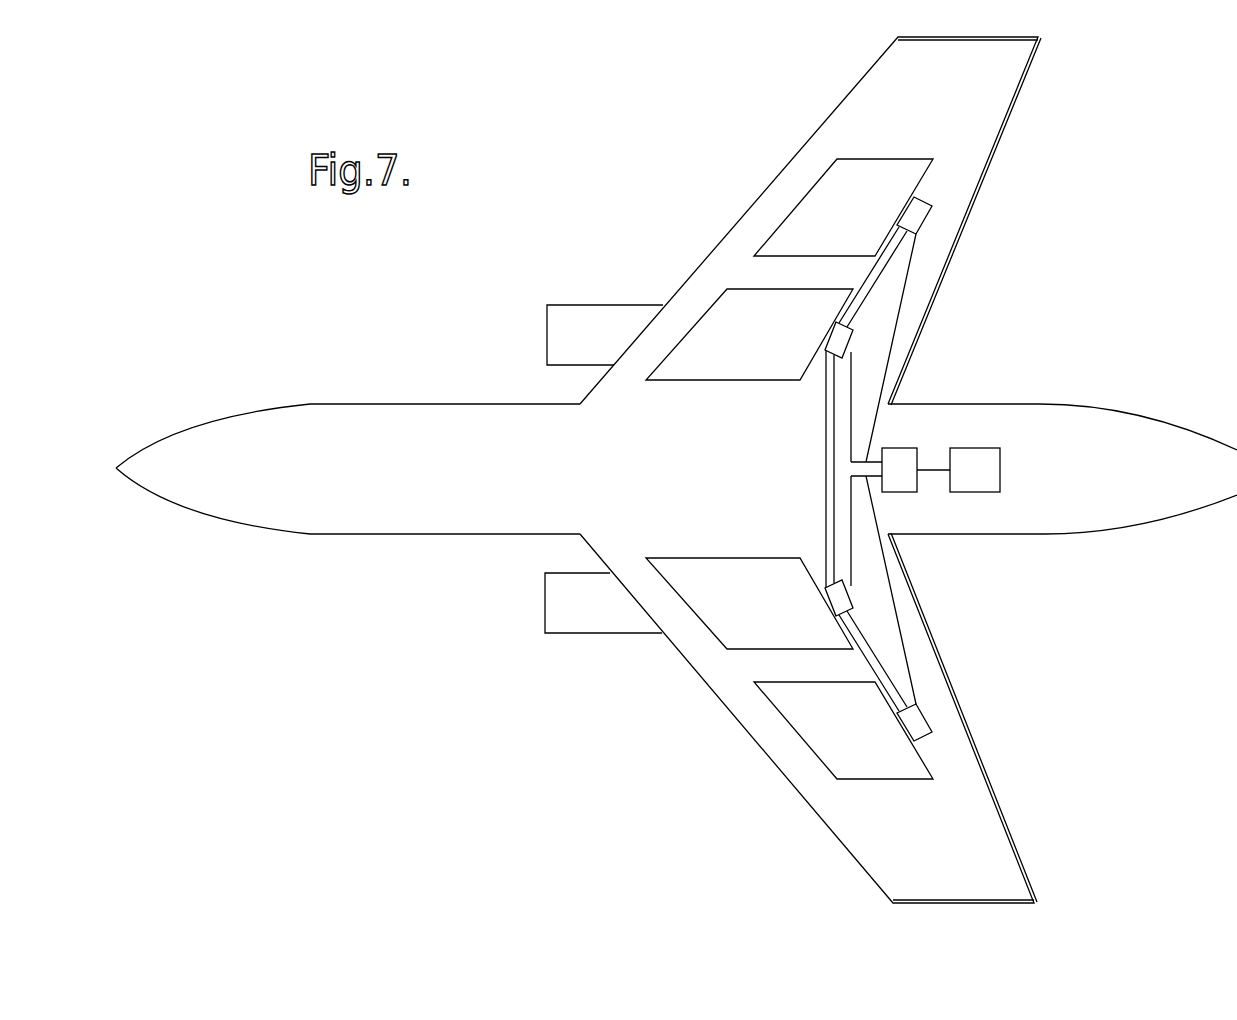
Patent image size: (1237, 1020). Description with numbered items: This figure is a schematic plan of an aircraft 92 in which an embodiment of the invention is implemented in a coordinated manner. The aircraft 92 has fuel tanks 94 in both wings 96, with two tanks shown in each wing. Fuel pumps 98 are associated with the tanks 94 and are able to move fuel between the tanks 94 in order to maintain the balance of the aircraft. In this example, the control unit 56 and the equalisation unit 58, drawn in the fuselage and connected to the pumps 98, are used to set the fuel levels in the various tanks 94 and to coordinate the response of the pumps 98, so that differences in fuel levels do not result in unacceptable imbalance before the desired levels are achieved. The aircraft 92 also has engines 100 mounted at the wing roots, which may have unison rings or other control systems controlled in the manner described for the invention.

The aircraft 92 is at (318, 414).
The fuel tanks 94 is at (831, 224).
The wings 96 is at (735, 238).
The fuel pumps 98 is at (918, 211).
The engines 100 is at (582, 313).
The equalisation unit 58 is at (900, 448).
The central control unit 56 is at (1000, 470).